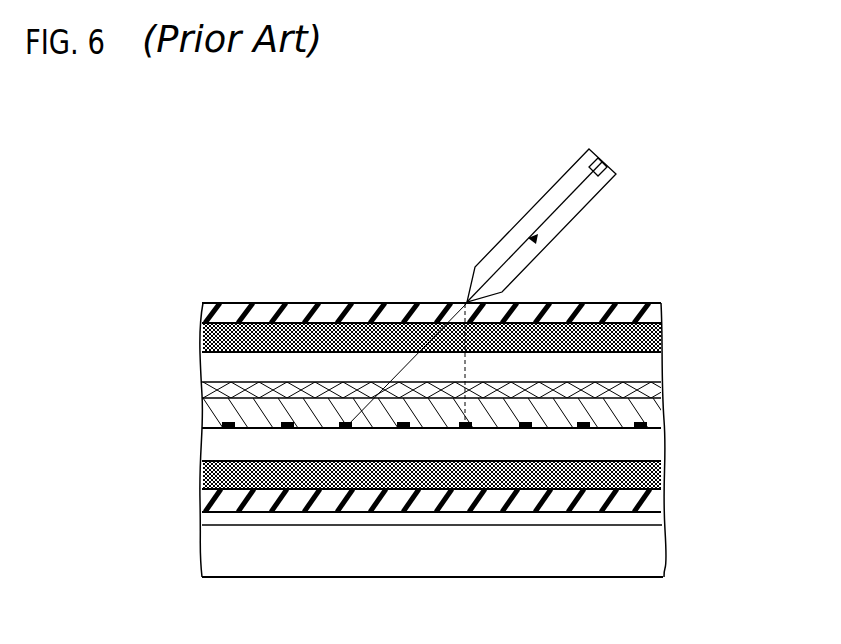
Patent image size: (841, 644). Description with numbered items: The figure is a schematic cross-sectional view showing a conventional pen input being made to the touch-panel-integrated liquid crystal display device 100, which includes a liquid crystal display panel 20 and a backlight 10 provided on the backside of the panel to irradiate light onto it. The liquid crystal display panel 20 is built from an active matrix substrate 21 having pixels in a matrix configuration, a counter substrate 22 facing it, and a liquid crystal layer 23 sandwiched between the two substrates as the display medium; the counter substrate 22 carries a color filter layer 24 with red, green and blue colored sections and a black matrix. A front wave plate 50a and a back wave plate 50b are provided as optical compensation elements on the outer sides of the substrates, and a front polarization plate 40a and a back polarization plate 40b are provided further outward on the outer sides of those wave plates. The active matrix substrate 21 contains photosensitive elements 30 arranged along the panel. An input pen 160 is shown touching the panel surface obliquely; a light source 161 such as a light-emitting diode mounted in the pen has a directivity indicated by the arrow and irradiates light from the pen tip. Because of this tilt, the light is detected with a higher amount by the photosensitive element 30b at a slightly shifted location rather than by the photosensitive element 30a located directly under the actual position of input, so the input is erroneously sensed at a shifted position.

The backlight 10 is at (676, 527).
The liquid crystal display panel 20 is at (385, 406).
The active matrix substrate 21 is at (408, 444).
The counter substrate 22 is at (204, 365).
The liquid crystal layer 23 is at (204, 415).
The color filter layer 24 is at (204, 392).
The photosensitive elements 30 is at (662, 425).
The photosensitive element 30a is at (465, 428).
The photosensitive element 30b is at (345, 428).
The front polarization plate 40a is at (661, 312).
The back polarization plate 40b is at (661, 503).
The front wave plate 50a is at (661, 340).
The back wave plate 50b is at (661, 478).
The touch-panel-integrated liquid crystal display device 100 is at (417, 429).
The input pen 160 is at (553, 219).
The light source 161 is at (604, 164).